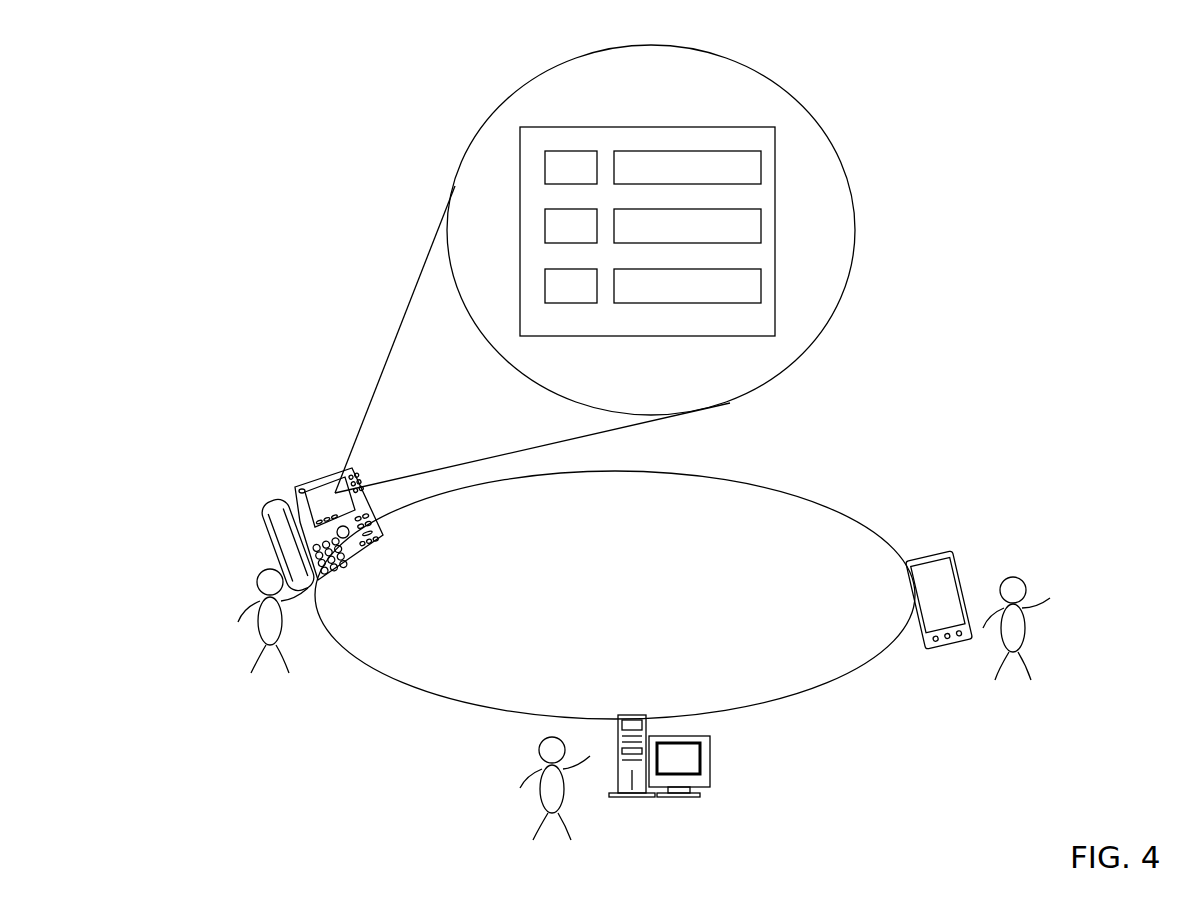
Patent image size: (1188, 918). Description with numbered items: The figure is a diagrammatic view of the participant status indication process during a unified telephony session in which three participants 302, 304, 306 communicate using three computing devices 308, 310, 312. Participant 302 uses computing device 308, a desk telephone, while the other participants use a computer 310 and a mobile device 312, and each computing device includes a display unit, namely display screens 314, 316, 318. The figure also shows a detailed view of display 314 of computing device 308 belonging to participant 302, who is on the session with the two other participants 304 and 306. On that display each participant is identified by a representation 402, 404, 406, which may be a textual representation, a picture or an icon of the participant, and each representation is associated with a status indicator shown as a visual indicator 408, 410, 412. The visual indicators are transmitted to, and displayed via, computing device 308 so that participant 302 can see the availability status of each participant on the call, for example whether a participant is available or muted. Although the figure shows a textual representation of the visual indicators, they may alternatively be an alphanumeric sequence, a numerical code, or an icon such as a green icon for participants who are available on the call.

The participant 302 is at (247, 635).
The participant 304 is at (533, 818).
The participant 306 is at (980, 658).
The computing device 308 is at (253, 528).
The computing device 310 is at (711, 785).
The computing device 312 is at (971, 599).
The display screen 314 is at (718, 127).
The display screen 316 is at (678, 760).
The display screen 318 is at (940, 590).
The representation 402 is at (545, 163).
The representation 404 is at (545, 221).
The representation 406 is at (545, 284).
The visual indicator 408 is at (761, 165).
The visual indicator 410 is at (761, 223).
The visual indicator 412 is at (761, 283).